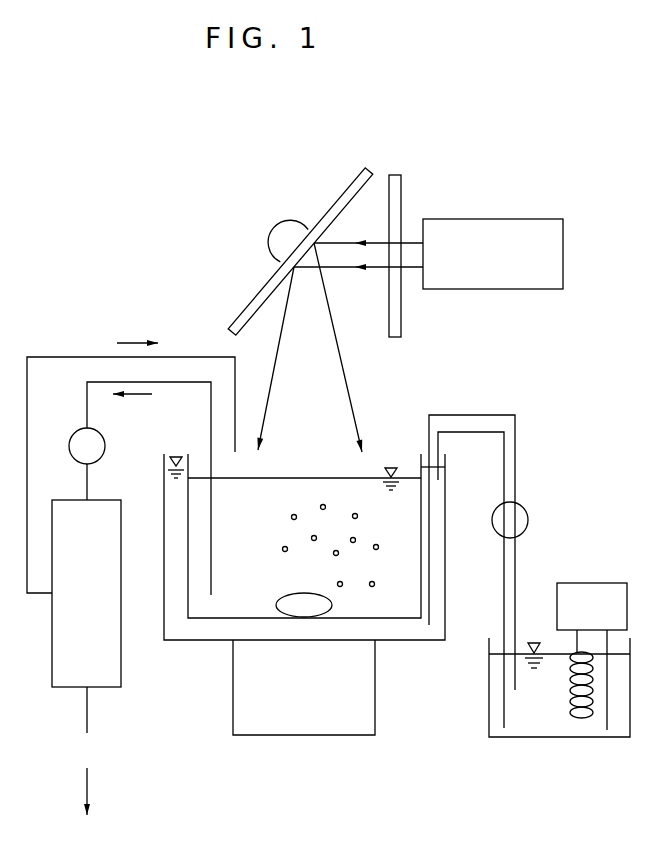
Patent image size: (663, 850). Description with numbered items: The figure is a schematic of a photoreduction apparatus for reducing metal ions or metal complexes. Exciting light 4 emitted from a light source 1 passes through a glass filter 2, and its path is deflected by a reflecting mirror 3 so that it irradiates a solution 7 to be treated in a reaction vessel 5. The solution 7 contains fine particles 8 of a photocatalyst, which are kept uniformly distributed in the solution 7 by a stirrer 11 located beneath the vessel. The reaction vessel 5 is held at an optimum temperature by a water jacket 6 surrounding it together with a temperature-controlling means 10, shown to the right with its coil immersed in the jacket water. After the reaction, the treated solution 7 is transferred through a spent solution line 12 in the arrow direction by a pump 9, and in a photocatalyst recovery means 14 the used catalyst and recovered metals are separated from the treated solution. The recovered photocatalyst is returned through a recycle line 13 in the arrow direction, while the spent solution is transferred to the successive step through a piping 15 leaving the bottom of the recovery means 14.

The light source 1 is at (525, 219).
The glass filter 2 is at (401, 178).
The reflecting mirror 3 is at (250, 296).
The exciting light 4 is at (346, 370).
The reaction vessel 5 is at (200, 620).
The water jacket 6 is at (420, 634).
The solution 7 is at (330, 490).
The fine particles 8 is at (378, 549).
The pump 9 is at (104, 452).
The temperature-controlling means 10 is at (590, 583).
The stirrer 11 is at (233, 716).
The spent solution line 12 is at (211, 418).
The recycle line 13 is at (57, 356).
The photocatalyst recovery means 14 is at (52, 664).
The piping 15 is at (88, 735).